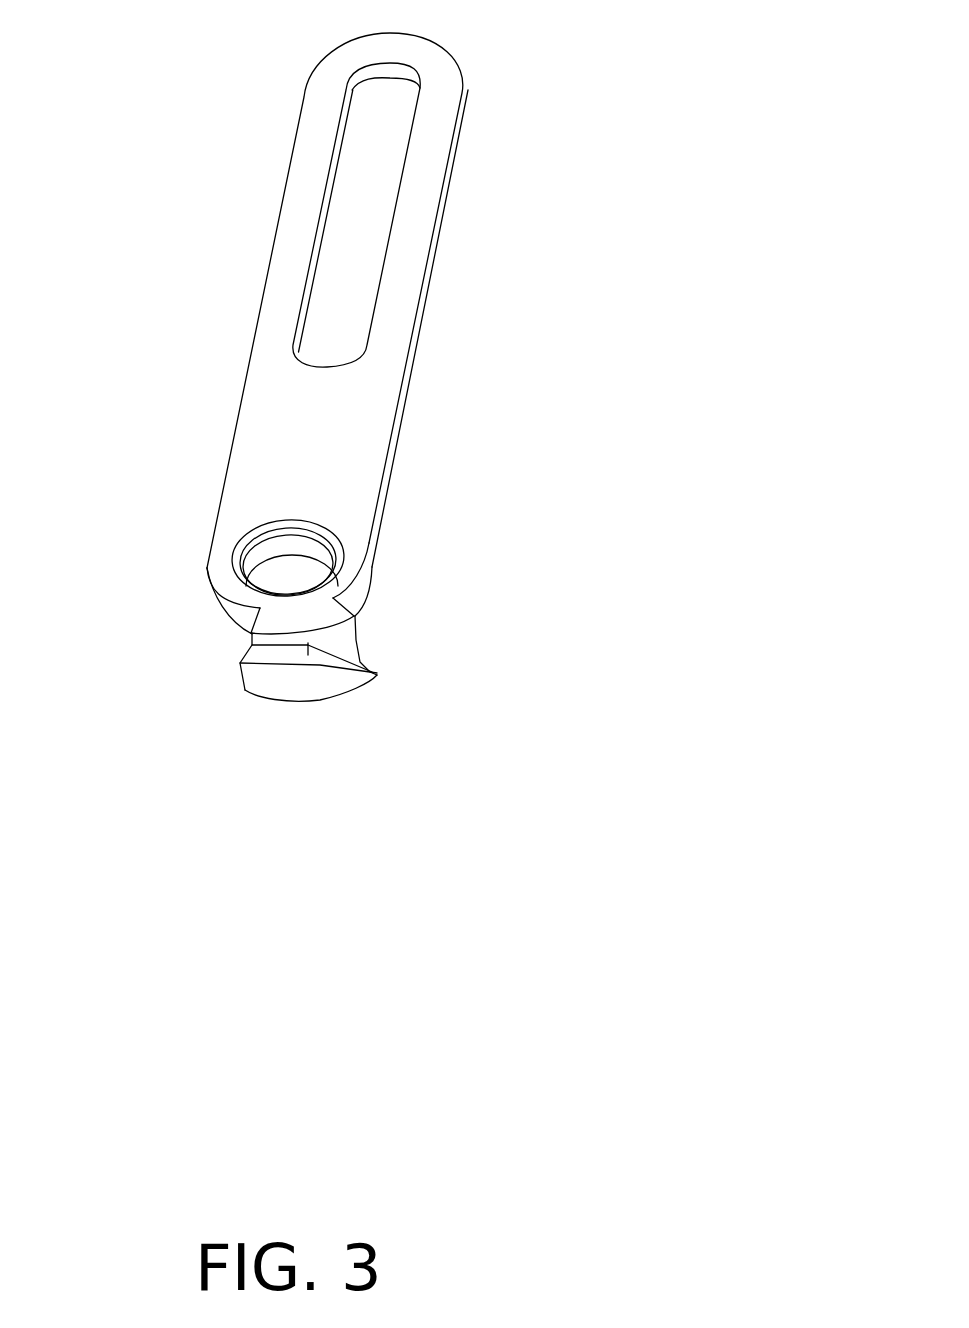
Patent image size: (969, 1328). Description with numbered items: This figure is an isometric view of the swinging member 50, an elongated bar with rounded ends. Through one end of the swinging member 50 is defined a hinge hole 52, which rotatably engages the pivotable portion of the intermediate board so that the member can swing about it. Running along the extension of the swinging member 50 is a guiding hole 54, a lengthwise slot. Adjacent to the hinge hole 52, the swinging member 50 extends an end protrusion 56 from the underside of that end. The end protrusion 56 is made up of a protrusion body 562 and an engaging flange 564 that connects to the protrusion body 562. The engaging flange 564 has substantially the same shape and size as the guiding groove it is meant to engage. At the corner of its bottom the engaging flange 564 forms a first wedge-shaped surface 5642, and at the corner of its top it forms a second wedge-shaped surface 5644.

The swinging member 50 is at (437, 65).
The hinge hole 52 is at (303, 570).
The guiding hole 54 is at (365, 218).
The end protrusion 56 is at (560, 572).
The protrusion body 562 is at (330, 612).
The engaging flange 564 is at (353, 678).
The first wedge-shaped surface 5642 is at (255, 702).
The second wedge-shaped surface 5644 is at (327, 658).